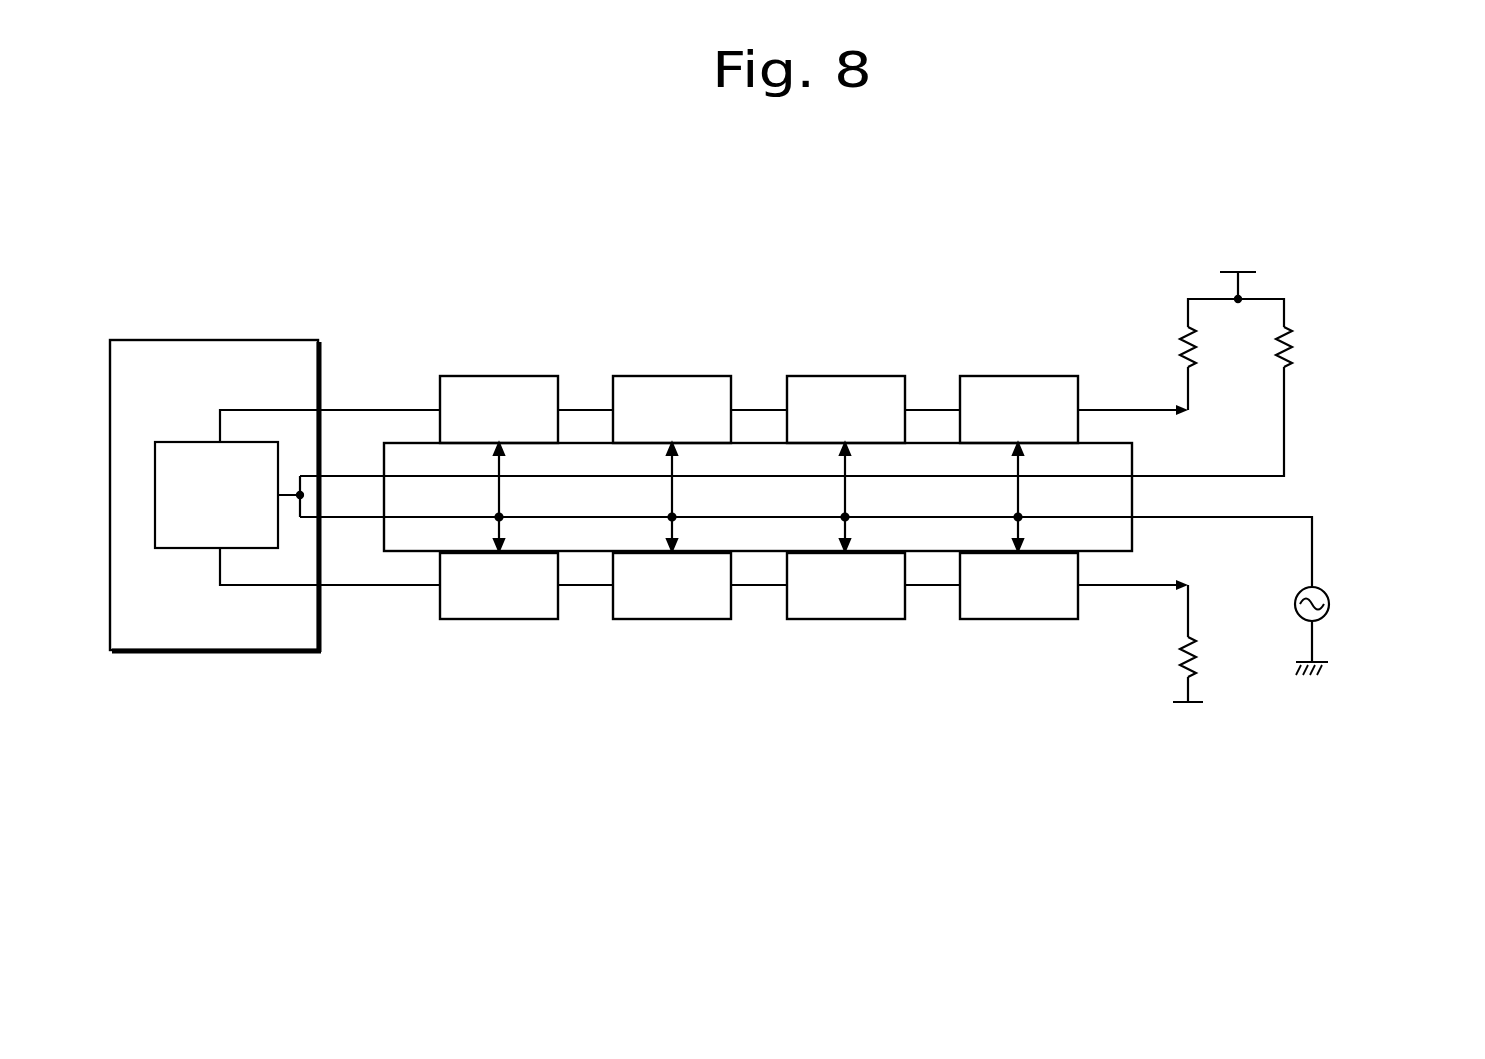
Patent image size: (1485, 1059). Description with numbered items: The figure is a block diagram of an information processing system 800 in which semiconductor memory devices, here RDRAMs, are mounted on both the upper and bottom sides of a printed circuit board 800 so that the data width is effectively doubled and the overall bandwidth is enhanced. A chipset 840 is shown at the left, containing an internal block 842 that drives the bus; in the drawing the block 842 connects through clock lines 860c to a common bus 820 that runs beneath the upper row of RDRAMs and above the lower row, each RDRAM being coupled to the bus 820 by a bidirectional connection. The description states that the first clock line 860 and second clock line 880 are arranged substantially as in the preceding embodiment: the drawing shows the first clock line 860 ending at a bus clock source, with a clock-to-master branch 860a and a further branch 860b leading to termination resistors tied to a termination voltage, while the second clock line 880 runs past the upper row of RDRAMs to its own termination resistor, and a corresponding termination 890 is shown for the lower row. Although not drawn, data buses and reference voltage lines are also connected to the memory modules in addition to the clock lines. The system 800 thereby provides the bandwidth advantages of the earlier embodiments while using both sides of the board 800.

The printed circuit board 800 is at (1394, 199).
The chipset 840 is at (262, 340).
The clock generator 842 is at (236, 506).
The memory bus 820 is at (1132, 543).
The first clock line 860 is at (1312, 543).
The clock-to-master line CTM 860a is at (1160, 517).
The clock line to termination 860b is at (1232, 476).
The clock lines to chipset 860c is at (300, 497).
The second clock line 880 is at (1117, 410).
The CFM2 termination resistor 890 is at (1121, 590).